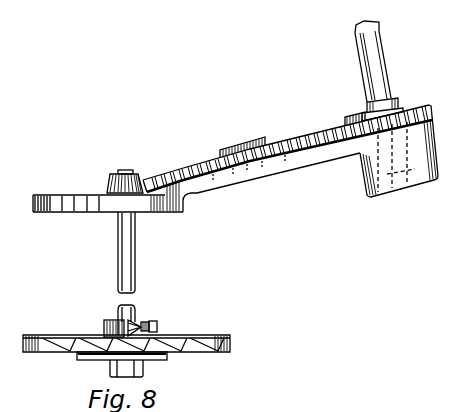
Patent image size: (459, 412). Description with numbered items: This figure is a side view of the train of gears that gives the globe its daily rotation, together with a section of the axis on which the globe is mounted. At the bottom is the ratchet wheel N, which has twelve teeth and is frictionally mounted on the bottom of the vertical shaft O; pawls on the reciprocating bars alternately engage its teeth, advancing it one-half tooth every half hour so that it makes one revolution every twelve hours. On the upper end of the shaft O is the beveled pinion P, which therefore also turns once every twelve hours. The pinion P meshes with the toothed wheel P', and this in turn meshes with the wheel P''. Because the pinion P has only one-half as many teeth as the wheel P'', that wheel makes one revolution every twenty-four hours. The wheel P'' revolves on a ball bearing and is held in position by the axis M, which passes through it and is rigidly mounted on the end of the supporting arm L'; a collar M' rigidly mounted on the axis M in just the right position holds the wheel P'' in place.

The beveled pinion P is at (129, 170).
The toothed wheel P' is at (286, 148).
The wheel P'' is at (340, 106).
The supporting arm L' is at (232, 166).
The axis M is at (380, 61).
The collar M' is at (406, 134).
The vertical shaft O is at (118, 256).
The ratchet wheel N is at (229, 338).